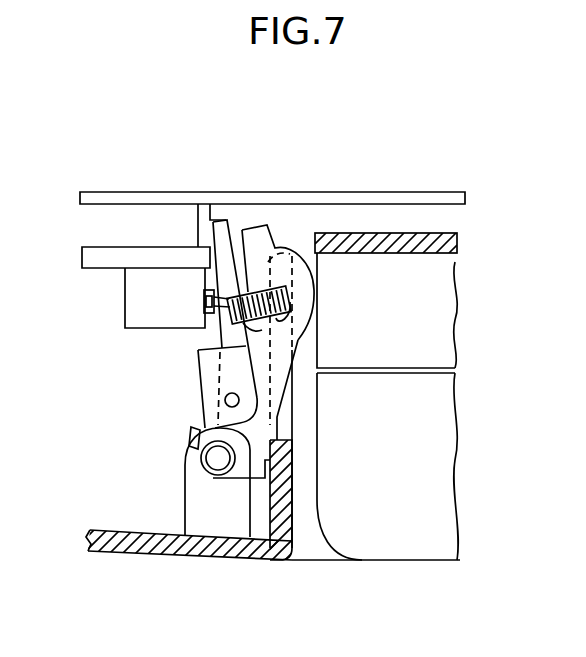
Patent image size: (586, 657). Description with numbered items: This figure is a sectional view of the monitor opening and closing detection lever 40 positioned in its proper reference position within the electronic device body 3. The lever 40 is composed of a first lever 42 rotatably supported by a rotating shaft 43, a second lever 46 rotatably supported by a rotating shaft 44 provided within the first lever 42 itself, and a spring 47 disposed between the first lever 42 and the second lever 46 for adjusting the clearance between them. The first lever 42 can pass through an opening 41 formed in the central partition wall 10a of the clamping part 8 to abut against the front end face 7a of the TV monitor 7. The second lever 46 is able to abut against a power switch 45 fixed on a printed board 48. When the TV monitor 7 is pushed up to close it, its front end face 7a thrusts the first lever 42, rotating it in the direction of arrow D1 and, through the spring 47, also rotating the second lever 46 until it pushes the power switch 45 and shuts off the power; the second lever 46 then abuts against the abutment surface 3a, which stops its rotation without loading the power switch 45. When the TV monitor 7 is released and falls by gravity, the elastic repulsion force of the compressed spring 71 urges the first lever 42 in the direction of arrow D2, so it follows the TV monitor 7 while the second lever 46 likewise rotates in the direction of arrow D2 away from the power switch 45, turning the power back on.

The electronic device body 3 is at (361, 192).
The abutment surface 3a is at (222, 218).
The printed board 48 is at (92, 257).
The power switch 45 is at (223, 327).
The second lever 46 is at (228, 226).
The first lever 42 is at (306, 316).
The spring 47 is at (300, 342).
The rotating shaft 44 is at (207, 397).
The rotating shaft 43 is at (206, 460).
The monitor opening and closing detection lever 40 is at (254, 295).
The opening 41 is at (292, 437).
The central partition wall 10a is at (282, 470).
The spring 71 is at (217, 478).
The front end face 7a is at (312, 505).
The TV monitor 7 is at (387, 560).
The clamping part 8 is at (458, 243).
The arrow D1 is at (289, 224).
The arrow D2 is at (325, 270).